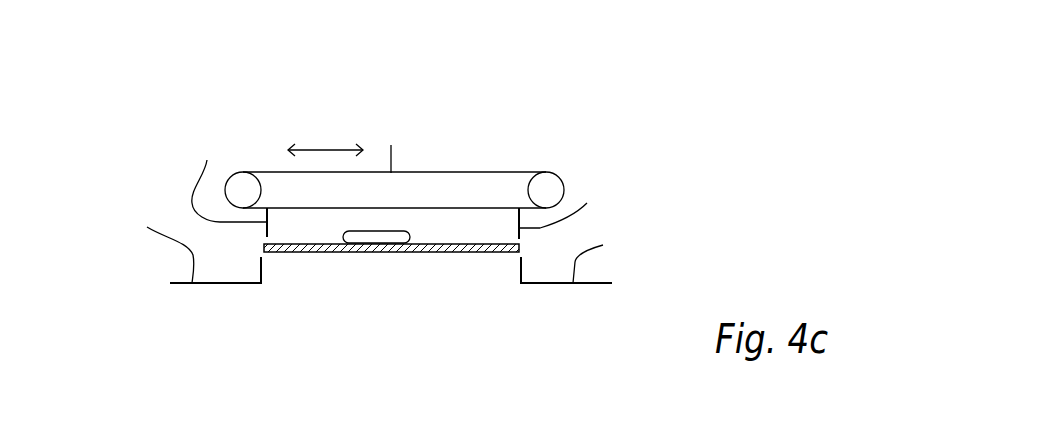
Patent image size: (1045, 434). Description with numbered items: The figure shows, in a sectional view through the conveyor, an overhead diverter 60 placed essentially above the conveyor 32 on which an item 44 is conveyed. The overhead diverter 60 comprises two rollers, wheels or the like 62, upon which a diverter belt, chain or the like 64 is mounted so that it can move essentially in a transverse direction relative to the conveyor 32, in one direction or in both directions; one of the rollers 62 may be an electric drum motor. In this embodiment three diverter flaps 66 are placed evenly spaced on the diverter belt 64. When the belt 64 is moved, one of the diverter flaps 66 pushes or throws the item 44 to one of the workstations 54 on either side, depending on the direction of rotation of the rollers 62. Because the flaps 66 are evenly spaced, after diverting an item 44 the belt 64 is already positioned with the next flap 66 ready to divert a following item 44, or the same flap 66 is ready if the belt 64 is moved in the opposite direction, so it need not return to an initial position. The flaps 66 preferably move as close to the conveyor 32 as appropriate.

The conveyor 32 is at (448, 253).
The item 44 is at (345, 232).
The workstation 54 is at (147, 227).
The overhead diverter 60 is at (464, 104).
The rollers 62 is at (262, 180).
The diverter belt 64 is at (472, 173).
The diverter flaps 66 is at (207, 160).